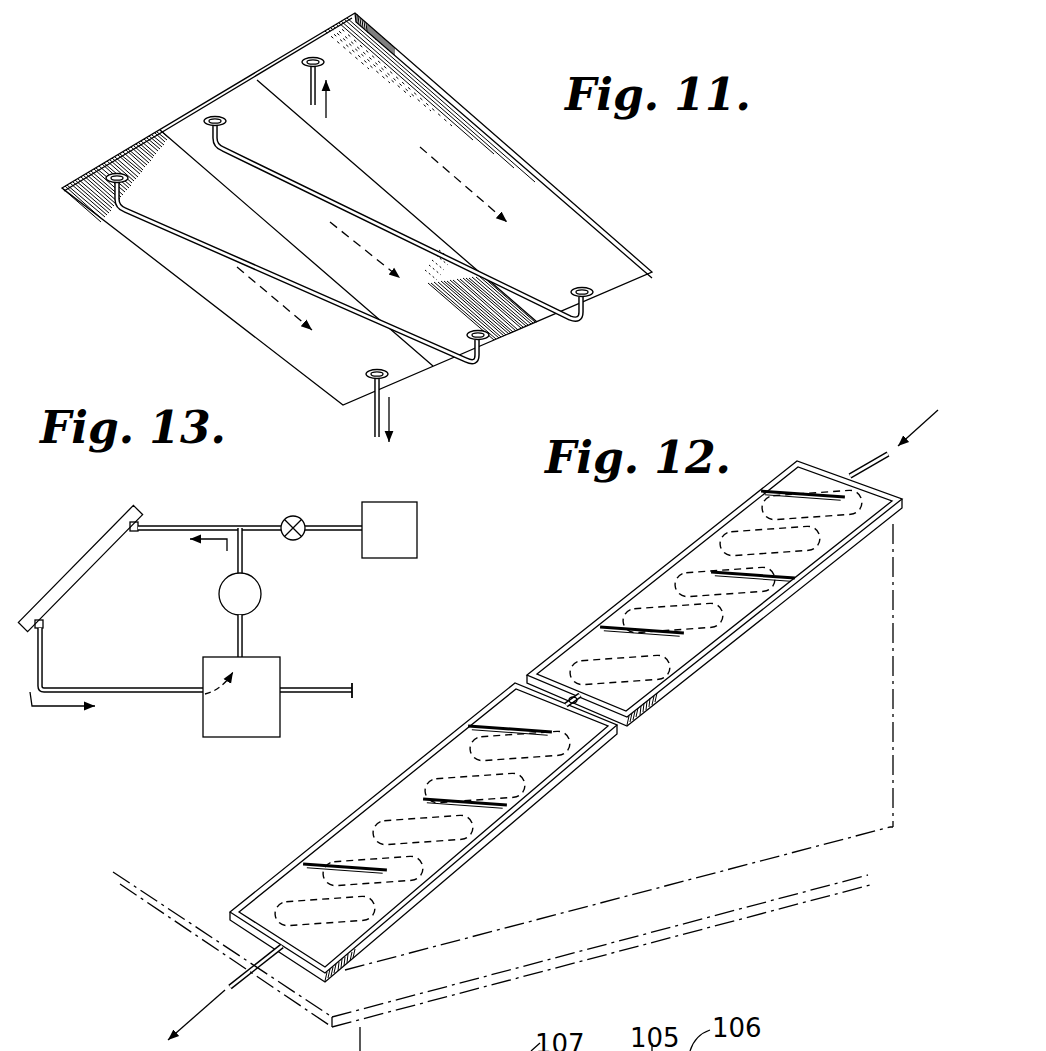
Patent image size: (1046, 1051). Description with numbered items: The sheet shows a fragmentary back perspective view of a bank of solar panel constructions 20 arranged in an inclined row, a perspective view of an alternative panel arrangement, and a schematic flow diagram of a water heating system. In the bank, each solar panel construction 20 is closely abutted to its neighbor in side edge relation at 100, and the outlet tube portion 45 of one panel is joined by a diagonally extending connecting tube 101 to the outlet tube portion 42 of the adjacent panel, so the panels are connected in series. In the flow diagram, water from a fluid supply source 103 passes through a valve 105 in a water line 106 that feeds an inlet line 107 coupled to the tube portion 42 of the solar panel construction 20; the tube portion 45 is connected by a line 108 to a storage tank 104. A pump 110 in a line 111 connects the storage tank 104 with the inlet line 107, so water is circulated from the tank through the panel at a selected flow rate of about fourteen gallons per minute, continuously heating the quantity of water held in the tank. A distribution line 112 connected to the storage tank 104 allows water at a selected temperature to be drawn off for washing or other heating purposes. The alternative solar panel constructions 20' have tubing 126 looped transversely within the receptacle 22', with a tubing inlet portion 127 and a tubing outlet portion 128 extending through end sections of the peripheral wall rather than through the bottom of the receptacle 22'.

In FIG. 11, the solar panel construction 20 is at (399, 209).
In FIG. 13, the solar panel construction 20 is at (80, 552).
In FIG. 11, the outlet tube portion 42 is at (112, 190).
In FIG. 13, the outlet tube portion 42 is at (140, 520).
In FIG. 11, the outlet tube portion 45 is at (590, 310).
In FIG. 13, the outlet tube portion 45 is at (42, 624).
In FIG. 11, the abutment of panels 100 is at (533, 320).
In FIG. 11, the connecting tube 101 is at (367, 212).
In FIG. 13, the fluid supply source 103 is at (418, 517).
In FIG. 13, the storage tank 104 is at (230, 728).
In FIG. 13, the valve 105 is at (293, 516).
In FIG. 13, the water line 106 is at (345, 532).
In FIG. 13, the inlet line 107 is at (200, 527).
In FIG. 13, the line 108 is at (112, 694).
In FIG. 13, the pump 110 is at (258, 605).
In FIG. 13, the line 111 is at (244, 558).
In FIG. 13, the distribution line 112 is at (337, 688).
In FIG. 12, the solar panel construction 20' is at (566, 670).
In FIG. 12, the receptacle 22' is at (566, 721).
In FIG. 12, the tubing 126 is at (746, 599).
In FIG. 12, the tubing inlet portion 127 is at (867, 467).
In FIG. 12, the tubing outlet portion 128 is at (247, 982).